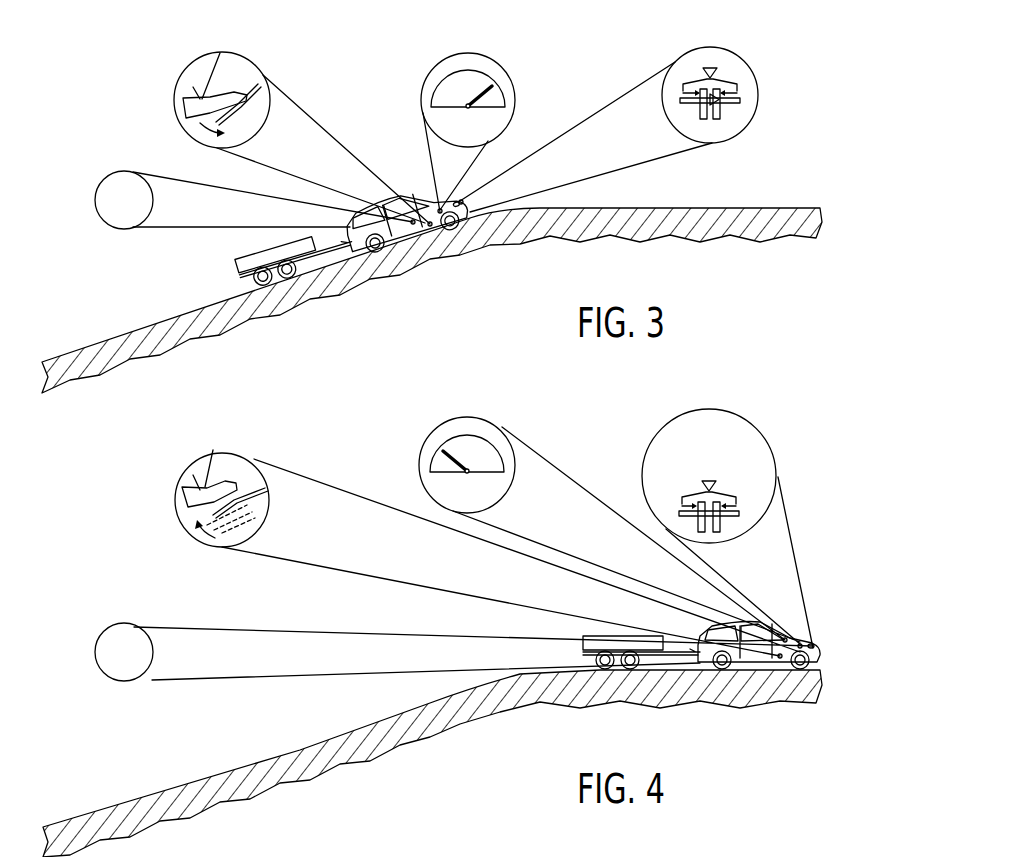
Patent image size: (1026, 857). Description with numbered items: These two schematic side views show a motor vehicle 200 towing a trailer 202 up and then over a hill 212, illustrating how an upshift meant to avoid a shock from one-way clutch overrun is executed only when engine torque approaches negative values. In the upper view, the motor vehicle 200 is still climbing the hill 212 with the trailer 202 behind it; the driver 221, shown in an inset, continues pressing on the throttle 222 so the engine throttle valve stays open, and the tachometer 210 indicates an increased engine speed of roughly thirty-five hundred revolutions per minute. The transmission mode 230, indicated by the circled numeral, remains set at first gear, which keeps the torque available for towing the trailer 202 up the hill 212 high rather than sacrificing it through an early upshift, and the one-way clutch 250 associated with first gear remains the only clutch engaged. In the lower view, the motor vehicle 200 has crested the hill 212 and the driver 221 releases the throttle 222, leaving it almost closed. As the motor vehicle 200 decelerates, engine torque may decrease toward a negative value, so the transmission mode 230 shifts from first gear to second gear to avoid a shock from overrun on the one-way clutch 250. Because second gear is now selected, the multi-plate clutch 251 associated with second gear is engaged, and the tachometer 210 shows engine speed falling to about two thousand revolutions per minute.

In FIG. 3, the motor vehicle 200 is at (423, 197).
In FIG. 4, the motor vehicle 200 is at (770, 667).
In FIG. 3, the trailer 202 is at (227, 272).
In FIG. 4, the trailer 202 is at (570, 630).
In FIG. 3, the tachometer 210 is at (465, 52).
In FIG. 4, the tachometer 210 is at (463, 417).
In FIG. 3, the hill 212 is at (37, 413).
In FIG. 4, the hill 212 is at (33, 830).
In FIG. 3, the driver 221 is at (219, 53).
In FIG. 4, the driver 221 is at (215, 457).
In FIG. 3, the throttle 222 is at (262, 90).
In FIG. 4, the throttle 222 is at (267, 493).
In FIG. 3, the transmission mode 230 is at (100, 180).
In FIG. 4, the transmission mode 230 is at (97, 647).
In FIG. 3, the one-way clutch 250 is at (758, 95).
In FIG. 4, the multi-plate clutch 251 is at (737, 413).